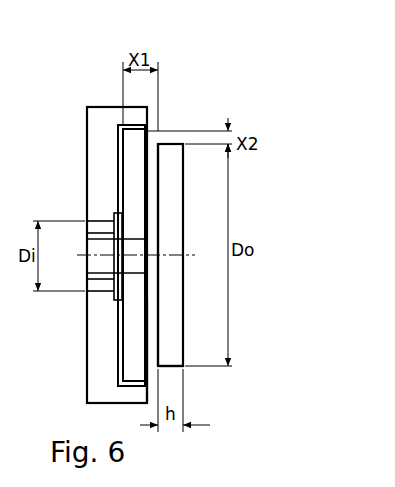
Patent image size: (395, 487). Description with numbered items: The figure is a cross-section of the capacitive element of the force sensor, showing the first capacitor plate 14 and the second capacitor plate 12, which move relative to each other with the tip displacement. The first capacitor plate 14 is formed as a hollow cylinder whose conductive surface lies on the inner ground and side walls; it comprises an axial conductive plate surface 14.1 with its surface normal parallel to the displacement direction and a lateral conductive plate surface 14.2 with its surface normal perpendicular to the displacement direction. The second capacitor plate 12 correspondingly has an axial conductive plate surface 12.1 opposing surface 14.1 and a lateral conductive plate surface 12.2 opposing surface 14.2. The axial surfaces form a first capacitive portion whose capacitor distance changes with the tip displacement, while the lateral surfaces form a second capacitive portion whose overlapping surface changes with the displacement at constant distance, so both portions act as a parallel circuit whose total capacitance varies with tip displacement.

The first capacitor plate 14 is at (88, 97).
The axial conductive plate surface 14.1 is at (75, 351).
The lateral conductive plate surface 14.2 is at (168, 218).
The second capacitor plate 12 is at (173, 207).
The axial conductive plate surface 12.1 is at (154, 300).
The lateral conductive plate surface 12.2 is at (171, 367).